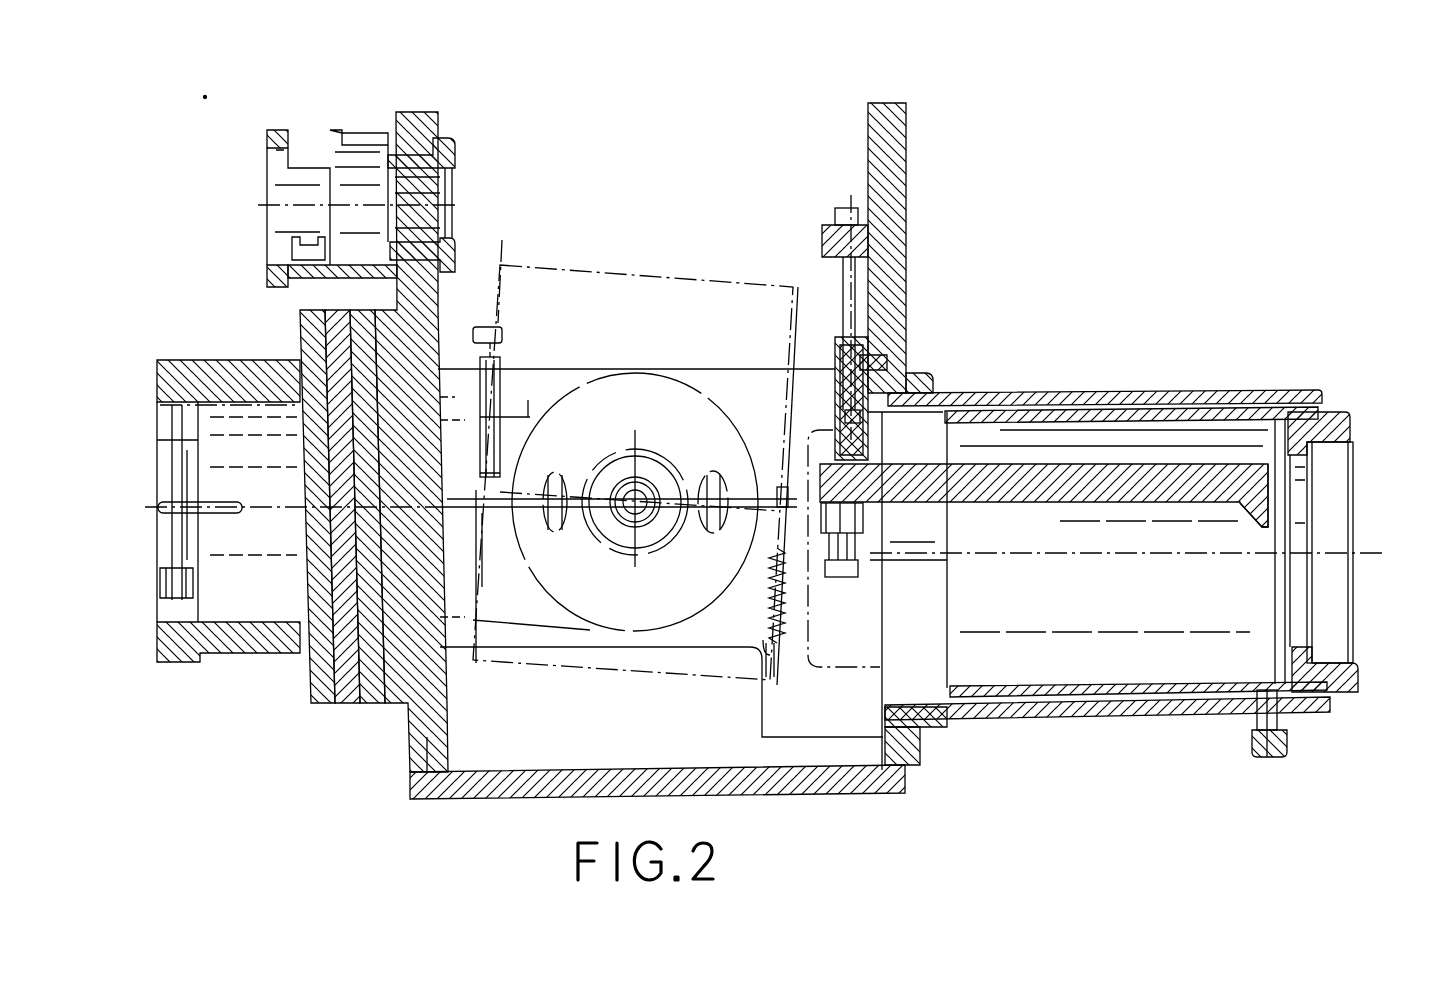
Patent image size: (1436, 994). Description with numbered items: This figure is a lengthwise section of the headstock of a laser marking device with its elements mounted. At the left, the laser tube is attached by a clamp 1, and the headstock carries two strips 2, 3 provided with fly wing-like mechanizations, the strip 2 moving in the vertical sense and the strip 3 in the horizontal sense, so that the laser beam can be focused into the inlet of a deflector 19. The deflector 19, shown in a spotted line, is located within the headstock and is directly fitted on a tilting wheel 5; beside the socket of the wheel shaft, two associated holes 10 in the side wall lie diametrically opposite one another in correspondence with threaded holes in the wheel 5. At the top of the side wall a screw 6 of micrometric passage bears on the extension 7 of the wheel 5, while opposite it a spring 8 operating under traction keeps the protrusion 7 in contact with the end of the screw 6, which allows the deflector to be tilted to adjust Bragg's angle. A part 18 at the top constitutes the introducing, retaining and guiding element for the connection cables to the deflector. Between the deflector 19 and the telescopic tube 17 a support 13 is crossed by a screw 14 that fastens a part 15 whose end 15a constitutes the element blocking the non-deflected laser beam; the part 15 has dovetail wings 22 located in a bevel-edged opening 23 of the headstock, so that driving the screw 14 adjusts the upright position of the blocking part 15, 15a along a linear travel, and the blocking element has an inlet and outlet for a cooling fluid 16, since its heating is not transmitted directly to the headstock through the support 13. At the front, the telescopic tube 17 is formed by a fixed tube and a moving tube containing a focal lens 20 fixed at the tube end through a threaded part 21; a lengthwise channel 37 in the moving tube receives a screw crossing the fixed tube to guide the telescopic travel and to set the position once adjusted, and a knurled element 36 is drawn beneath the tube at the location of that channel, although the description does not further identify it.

The clamp 1 is at (176, 358).
The strip 2 is at (336, 655).
The strip 3 is at (384, 692).
The tilting wheel 5 is at (680, 380).
The screw of micrometric passage 6 is at (480, 323).
The extension 7 is at (497, 327).
The spring 8 is at (778, 545).
The associated holes 10 is at (555, 533).
The support 13 is at (828, 227).
The screw 14 is at (870, 247).
The part 15 is at (1038, 490).
The blocking element 15a is at (1257, 517).
The fluid 16 is at (845, 578).
The telescopic tube 17 is at (1148, 370).
The part 18 is at (326, 118).
The deflector 19 is at (585, 300).
The focal lens 20 is at (1300, 538).
The threaded part 21 is at (1337, 410).
The dovetail wings 22 is at (903, 370).
The bevel-edged opening 23 is at (880, 287).
The adjusting screw 36 is at (1278, 758).
The lengthwise channel 37 is at (1208, 700).